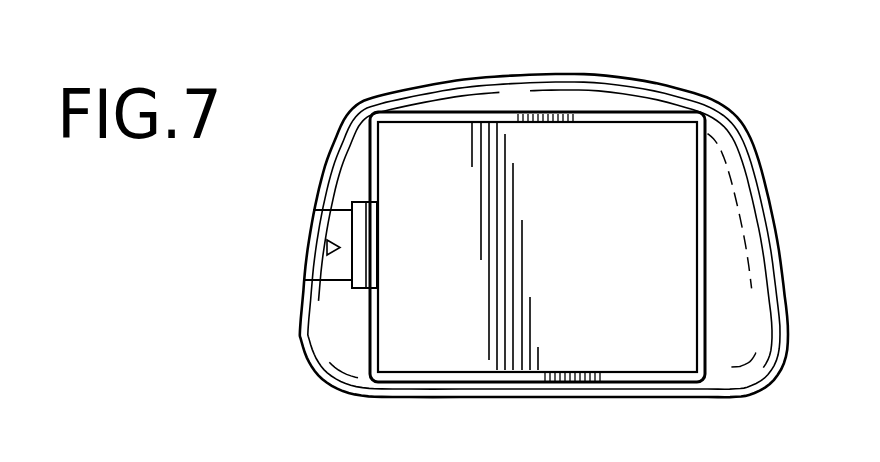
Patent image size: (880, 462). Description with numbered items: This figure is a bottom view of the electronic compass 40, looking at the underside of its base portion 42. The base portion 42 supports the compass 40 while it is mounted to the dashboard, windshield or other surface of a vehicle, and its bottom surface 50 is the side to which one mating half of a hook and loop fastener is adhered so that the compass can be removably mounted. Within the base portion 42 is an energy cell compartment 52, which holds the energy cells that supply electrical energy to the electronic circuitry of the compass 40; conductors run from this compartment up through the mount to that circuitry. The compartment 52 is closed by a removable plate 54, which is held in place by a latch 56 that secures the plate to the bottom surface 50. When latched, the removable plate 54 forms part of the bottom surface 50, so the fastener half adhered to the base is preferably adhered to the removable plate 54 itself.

The electronic compass 40 is at (692, 48).
The base portion 42 is at (775, 158).
The bottom surface 50 is at (583, 218).
The energy cell compartment 52 is at (410, 170).
The removable plate 54 is at (463, 258).
The latch 56 is at (365, 235).